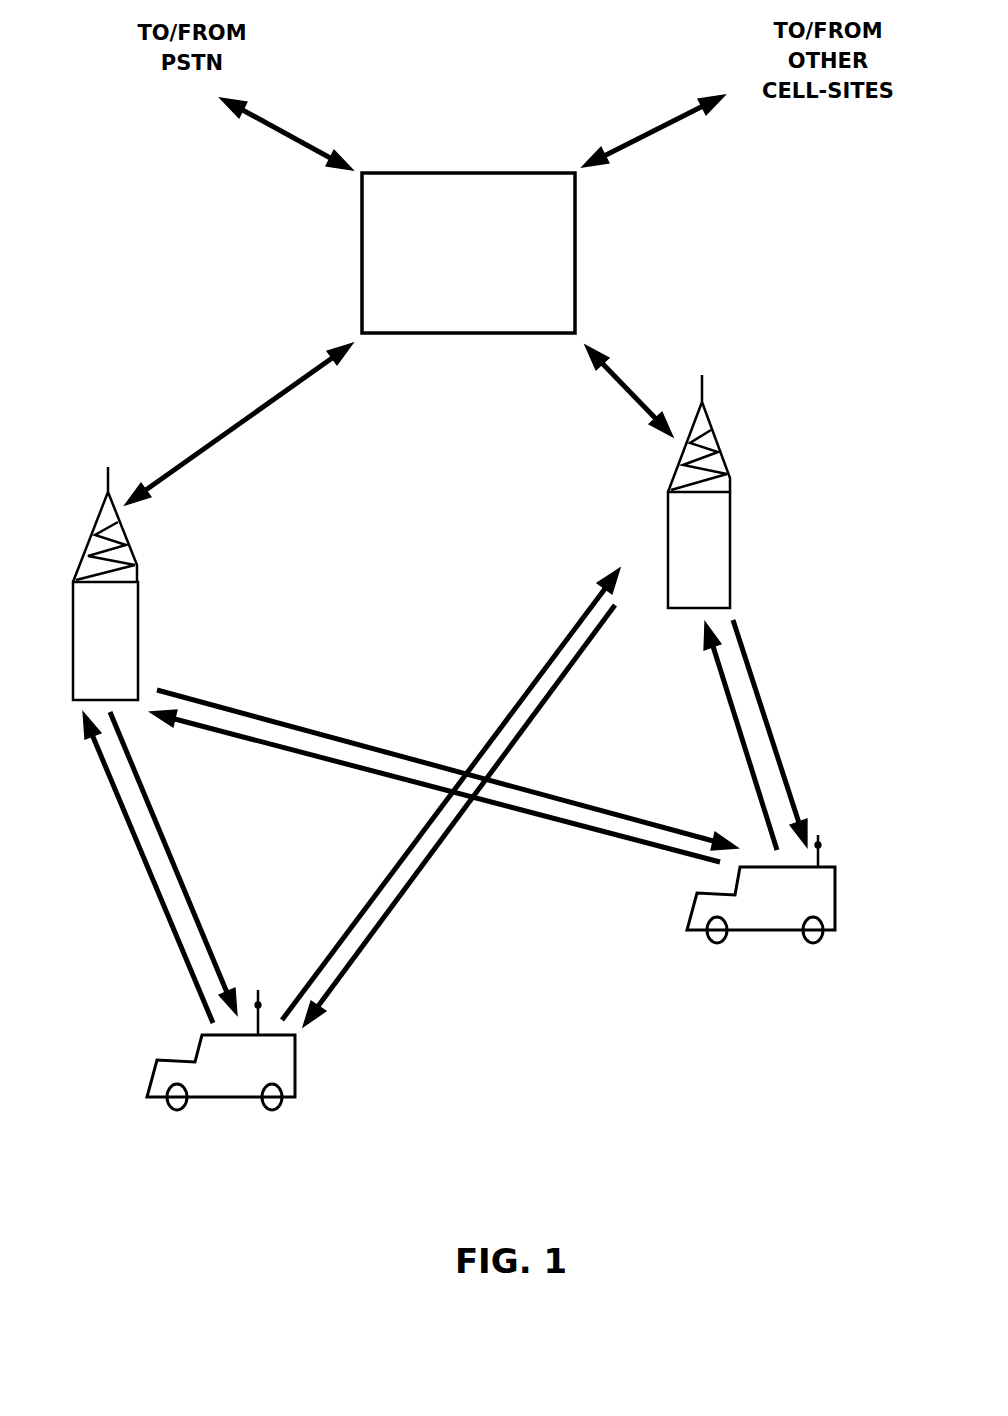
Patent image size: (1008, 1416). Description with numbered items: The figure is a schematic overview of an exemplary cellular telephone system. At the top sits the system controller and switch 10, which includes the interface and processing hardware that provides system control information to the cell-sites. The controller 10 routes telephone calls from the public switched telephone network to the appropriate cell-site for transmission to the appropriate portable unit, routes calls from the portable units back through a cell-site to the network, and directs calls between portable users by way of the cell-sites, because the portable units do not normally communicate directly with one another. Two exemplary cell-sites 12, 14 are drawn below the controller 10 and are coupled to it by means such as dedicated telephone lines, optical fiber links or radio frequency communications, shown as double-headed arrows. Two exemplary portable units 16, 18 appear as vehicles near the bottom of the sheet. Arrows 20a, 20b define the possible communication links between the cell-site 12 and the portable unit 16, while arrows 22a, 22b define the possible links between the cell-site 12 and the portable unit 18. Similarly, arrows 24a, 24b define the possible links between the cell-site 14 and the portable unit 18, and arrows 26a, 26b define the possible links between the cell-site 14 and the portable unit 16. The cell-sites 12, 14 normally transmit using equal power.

The system controller and switch 10 is at (402, 173).
The cell-site 12 is at (73, 602).
The cell-site 14 is at (733, 557).
The portable unit 16 is at (300, 1090).
The portable unit 18 is at (840, 917).
The arrow 20a is at (213, 953).
The arrow 20b is at (125, 822).
The arrow 22a is at (258, 720).
The arrow 22b is at (255, 738).
The arrow 24a is at (773, 735).
The arrow 24b is at (723, 690).
The arrow 26a is at (405, 903).
The arrow 26b is at (388, 880).